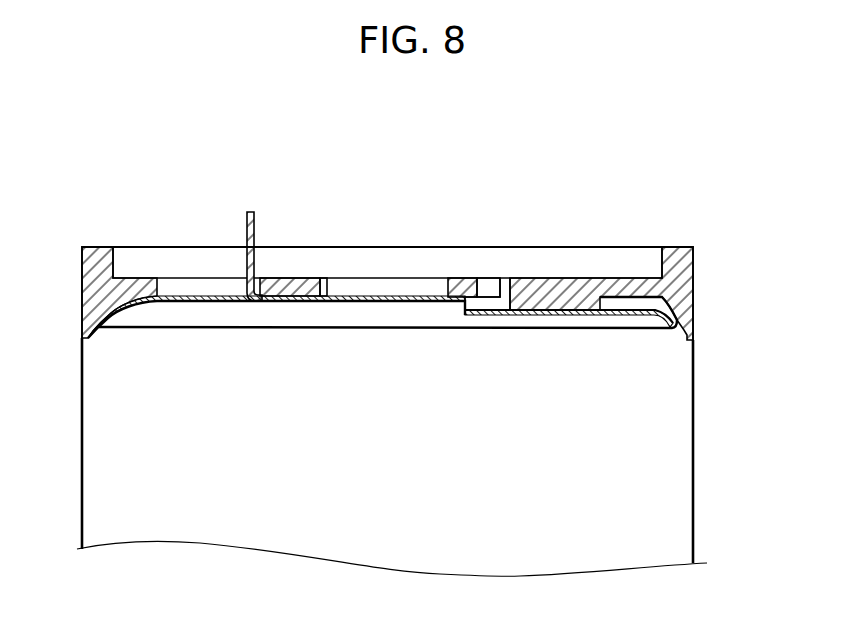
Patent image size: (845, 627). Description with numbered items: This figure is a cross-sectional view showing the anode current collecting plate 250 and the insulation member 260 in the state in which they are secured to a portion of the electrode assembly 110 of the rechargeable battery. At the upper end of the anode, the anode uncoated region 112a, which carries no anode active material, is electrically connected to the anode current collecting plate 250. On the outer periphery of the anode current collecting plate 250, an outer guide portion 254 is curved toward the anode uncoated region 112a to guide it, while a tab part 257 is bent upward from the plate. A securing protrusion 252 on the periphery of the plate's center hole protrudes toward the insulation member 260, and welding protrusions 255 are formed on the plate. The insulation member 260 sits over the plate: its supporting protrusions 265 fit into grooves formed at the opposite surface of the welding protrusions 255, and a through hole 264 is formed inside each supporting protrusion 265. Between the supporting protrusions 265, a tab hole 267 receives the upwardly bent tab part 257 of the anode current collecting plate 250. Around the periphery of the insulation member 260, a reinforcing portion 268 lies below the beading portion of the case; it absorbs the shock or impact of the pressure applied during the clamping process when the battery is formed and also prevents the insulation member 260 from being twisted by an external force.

The electrode assembly 110 is at (704, 450).
The anode uncoated region 112a is at (586, 328).
The anode current collecting plate 250 is at (395, 367).
The securing protrusion 252 is at (327, 288).
The outer guide portion 254 is at (114, 324).
The welding protrusion 255 is at (620, 316).
The tab part 257 is at (256, 233).
The insulation member 260 is at (697, 276).
The through hole 264 is at (487, 278).
The supporting protrusion 265 is at (500, 292).
The tab hole 267 is at (180, 247).
The reinforcing portion 268 is at (96, 252).